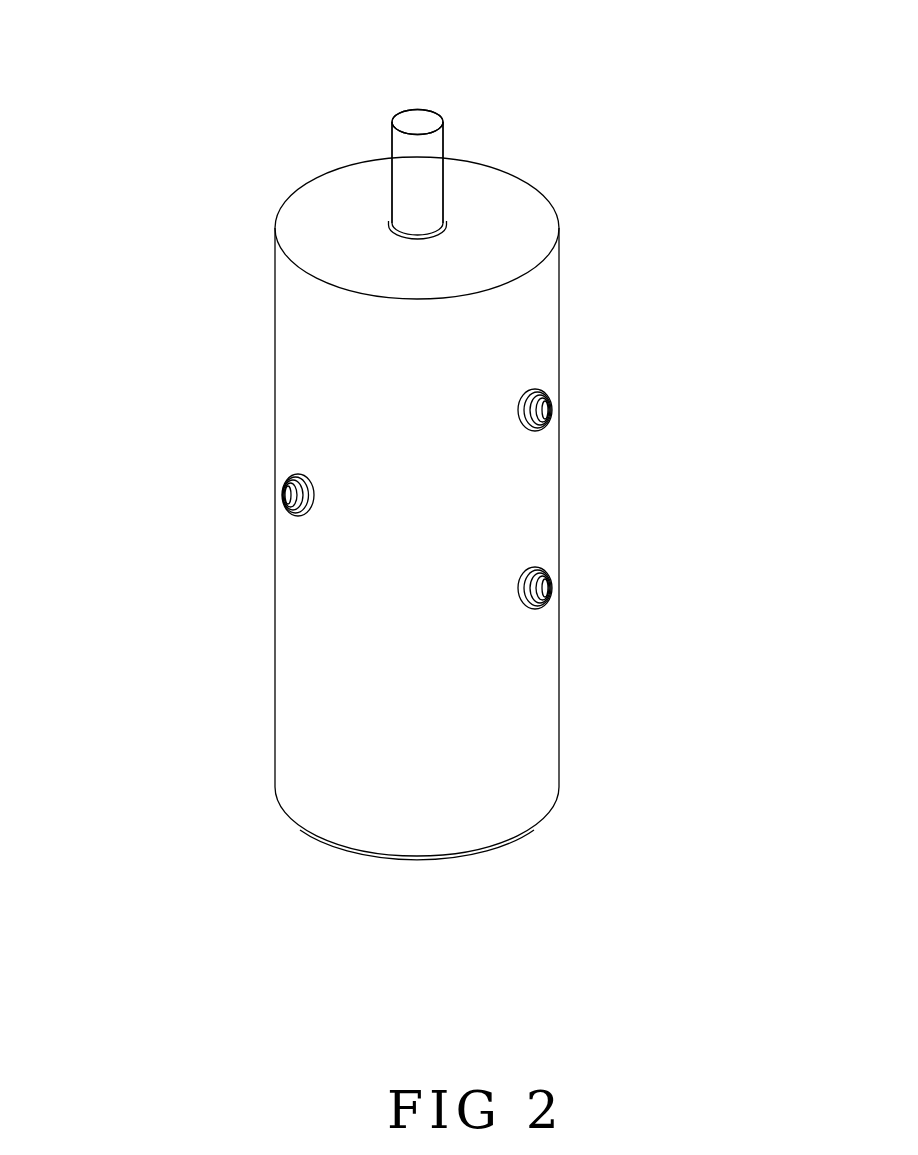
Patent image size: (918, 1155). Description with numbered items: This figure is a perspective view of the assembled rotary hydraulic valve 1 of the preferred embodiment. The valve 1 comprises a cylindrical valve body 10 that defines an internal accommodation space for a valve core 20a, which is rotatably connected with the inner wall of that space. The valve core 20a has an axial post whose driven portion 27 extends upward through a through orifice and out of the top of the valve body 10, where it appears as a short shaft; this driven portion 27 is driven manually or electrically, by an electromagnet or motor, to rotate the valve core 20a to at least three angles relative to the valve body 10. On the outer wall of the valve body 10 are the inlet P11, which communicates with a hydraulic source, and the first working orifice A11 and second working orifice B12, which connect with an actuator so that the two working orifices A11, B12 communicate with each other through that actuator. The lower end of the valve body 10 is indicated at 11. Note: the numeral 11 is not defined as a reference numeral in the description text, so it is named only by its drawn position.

The rotary hydraulic valve 1 is at (235, 195).
The valve body 10 is at (490, 532).
The bottom end of housing 11 is at (462, 855).
The valve core 20a is at (418, 122).
The driven portion 27 is at (417, 167).
The first working orifice A11 is at (535, 410).
The second working orifice B12 is at (535, 588).
The inlet P11 is at (298, 495).